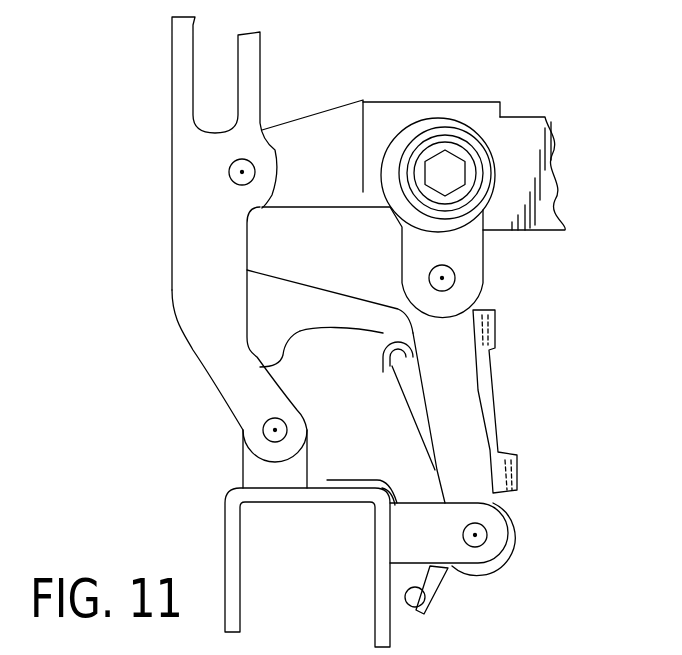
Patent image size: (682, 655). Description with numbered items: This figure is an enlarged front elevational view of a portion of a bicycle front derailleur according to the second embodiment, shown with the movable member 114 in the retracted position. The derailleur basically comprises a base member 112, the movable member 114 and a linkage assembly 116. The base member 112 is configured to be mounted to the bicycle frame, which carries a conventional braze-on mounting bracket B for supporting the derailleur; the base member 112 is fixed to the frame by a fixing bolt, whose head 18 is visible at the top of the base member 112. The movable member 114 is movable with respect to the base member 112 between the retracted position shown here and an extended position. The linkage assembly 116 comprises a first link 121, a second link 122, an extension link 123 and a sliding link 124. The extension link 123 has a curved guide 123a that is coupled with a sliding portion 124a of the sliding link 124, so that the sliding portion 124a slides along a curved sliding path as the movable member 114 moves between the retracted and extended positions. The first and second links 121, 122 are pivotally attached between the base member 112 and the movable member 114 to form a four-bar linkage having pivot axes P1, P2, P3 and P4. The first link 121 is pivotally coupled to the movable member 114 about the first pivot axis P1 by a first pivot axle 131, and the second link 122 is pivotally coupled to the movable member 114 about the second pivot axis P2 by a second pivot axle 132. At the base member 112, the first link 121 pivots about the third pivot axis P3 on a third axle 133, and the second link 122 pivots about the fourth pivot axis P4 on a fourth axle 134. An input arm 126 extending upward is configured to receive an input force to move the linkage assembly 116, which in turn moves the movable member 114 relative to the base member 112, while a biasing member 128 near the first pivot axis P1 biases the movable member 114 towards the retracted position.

The base member 112 is at (402, 99).
The fastener 18 is at (452, 145).
The braze-on mounting bracket B is at (543, 117).
The input arm 126 is at (172, 63).
The fourth pivot axis P4 is at (242, 172).
The fourth axle 134 is at (229, 173).
The second link 122 is at (168, 260).
The extension link 123 is at (341, 286).
The curved guide 123a is at (260, 368).
The sliding link 124 is at (388, 383).
The sliding portion 124a is at (381, 347).
The second pivot axis P2 is at (275, 430).
The second pivot axle 132 is at (273, 434).
The movable member 114 is at (222, 528).
The third axle 133 is at (450, 270).
The third pivot axis P3 is at (442, 278).
The linkage assembly 116 is at (499, 386).
The first link 121 is at (499, 415).
The first pivot axle 131 is at (485, 524).
The first pivot axis P1 is at (475, 535).
The biasing member 128 is at (518, 547).